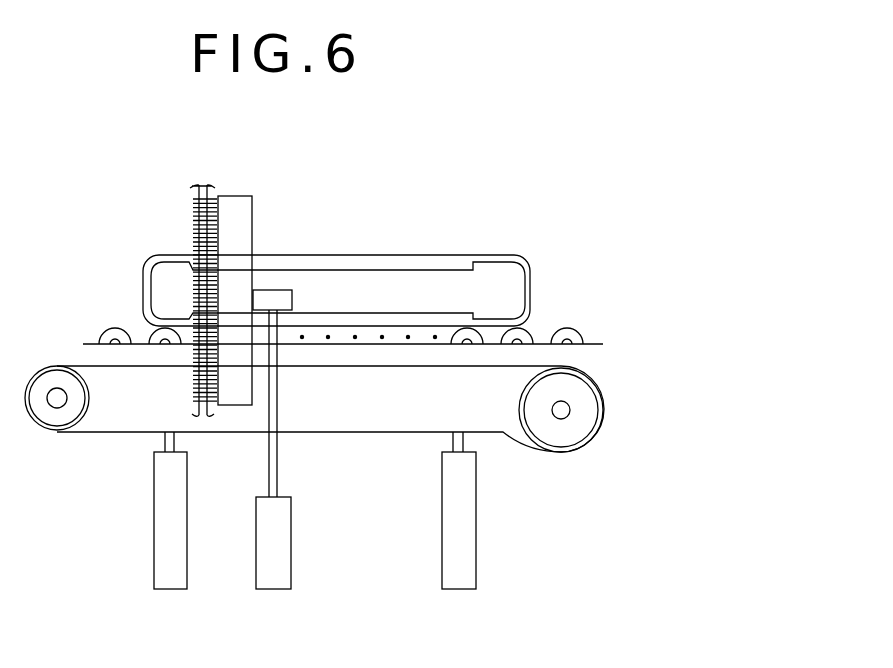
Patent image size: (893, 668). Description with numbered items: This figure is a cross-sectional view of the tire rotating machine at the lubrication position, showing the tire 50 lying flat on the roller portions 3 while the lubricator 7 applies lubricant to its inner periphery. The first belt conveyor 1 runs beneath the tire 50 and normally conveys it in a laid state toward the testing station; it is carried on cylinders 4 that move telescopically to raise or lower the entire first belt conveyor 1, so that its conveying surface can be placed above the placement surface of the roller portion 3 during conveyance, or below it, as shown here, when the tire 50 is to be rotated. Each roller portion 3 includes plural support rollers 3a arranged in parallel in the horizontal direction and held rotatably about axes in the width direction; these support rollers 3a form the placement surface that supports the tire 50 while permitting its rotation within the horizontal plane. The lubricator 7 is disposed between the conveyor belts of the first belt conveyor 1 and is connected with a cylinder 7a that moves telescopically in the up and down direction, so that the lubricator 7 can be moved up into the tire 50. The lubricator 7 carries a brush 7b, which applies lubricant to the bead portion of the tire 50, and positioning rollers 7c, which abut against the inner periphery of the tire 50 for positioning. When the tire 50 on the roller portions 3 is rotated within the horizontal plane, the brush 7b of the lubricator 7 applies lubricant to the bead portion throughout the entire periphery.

The first belt conveyor 1 is at (88, 366).
The roller portion 3 is at (112, 322).
The support roller 3a is at (532, 327).
The cylinder 4 is at (163, 518).
The lubricator 7 is at (255, 359).
The cylinder 7a is at (284, 548).
The brush 7b is at (232, 196).
The positioning roller 7c is at (203, 185).
The tire 50 is at (503, 253).